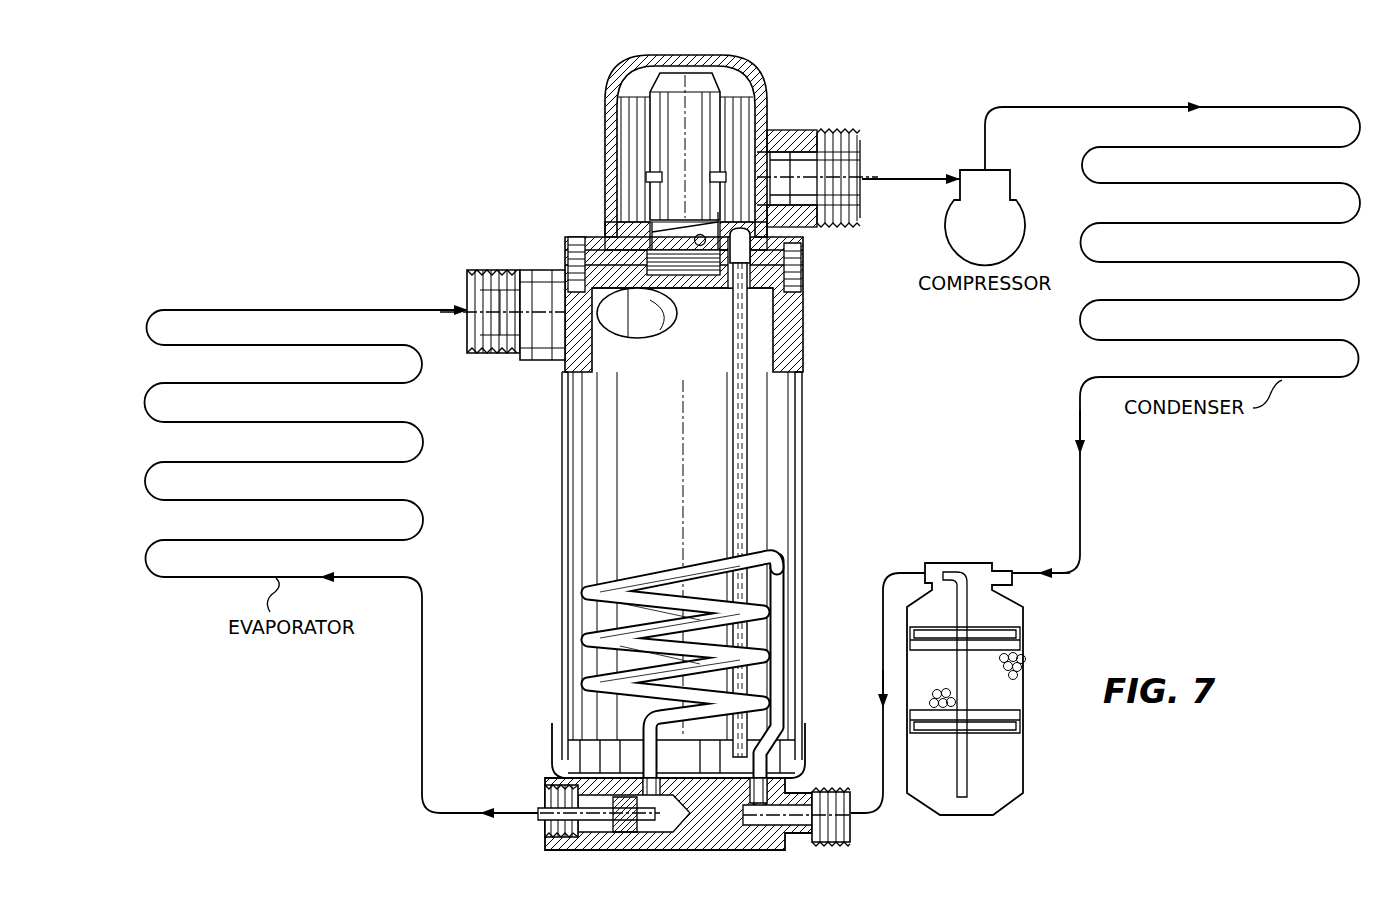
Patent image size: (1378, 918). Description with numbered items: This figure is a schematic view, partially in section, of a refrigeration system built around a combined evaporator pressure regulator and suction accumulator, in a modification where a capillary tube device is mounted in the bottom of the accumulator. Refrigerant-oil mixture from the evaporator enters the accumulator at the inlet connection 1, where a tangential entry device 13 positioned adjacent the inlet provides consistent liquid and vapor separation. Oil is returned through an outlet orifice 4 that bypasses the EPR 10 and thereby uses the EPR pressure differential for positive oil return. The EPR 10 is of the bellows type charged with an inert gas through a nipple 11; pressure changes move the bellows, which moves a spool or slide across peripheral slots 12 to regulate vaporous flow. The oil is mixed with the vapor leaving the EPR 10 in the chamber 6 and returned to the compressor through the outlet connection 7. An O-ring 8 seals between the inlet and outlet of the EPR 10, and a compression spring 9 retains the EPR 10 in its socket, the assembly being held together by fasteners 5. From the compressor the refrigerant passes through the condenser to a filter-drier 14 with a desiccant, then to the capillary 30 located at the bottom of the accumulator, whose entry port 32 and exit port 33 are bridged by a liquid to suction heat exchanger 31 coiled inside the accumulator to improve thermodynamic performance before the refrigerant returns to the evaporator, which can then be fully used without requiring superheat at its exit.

The inlet connection 1 is at (478, 272).
The outlet orifice 4 is at (752, 235).
The bolt 5 is at (803, 270).
The chamber 6 is at (630, 66).
The outlet connection 7 is at (815, 130).
The O-ring 8 is at (612, 208).
The compression spring 9 is at (616, 236).
The EPR 10 is at (656, 118).
The nipple 11 is at (696, 236).
The peripheral slots 12 is at (650, 176).
The tangential entry device 13 is at (648, 338).
The filter-drier 14 is at (989, 689).
The capillary 30 is at (592, 832).
The liquid to suction heat exchanger 31 is at (776, 588).
The entry port 32 is at (815, 798).
The exit port 33 is at (552, 836).